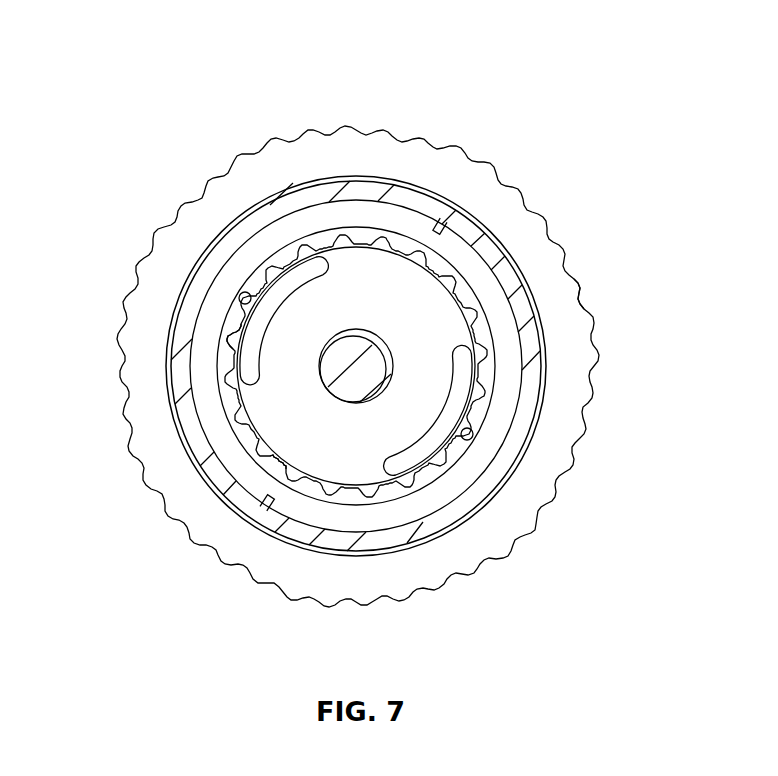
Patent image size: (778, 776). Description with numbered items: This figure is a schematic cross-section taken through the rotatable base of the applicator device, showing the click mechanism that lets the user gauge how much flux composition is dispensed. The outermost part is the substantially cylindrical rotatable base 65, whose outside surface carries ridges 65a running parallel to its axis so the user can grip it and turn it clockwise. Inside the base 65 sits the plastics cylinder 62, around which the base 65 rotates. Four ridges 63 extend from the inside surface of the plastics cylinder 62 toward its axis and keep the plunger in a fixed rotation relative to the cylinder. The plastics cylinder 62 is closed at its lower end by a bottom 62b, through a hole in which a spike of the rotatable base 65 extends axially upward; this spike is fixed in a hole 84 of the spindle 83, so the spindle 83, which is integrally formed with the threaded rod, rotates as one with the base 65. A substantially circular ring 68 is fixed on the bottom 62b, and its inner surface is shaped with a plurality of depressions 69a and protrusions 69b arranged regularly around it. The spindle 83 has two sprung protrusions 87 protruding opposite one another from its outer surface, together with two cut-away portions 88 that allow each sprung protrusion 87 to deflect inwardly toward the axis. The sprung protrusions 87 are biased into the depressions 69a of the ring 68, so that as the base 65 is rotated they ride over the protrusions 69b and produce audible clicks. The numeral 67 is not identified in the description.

The plastics cylinder 62 is at (534, 408).
The bottom 62b is at (212, 405).
The ridges 63 is at (494, 452).
The rotatable base 65 is at (600, 377).
The ridges 65a is at (588, 308).
The retaining tab 67 is at (443, 498).
The ring 68 is at (386, 494).
The depressions 69a is at (266, 502).
The protrusions 69b is at (283, 461).
The spindle 83 is at (392, 292).
The hole 84 is at (348, 329).
The sprung protrusions 87 is at (243, 296).
The cut-away portions 88 is at (253, 343).